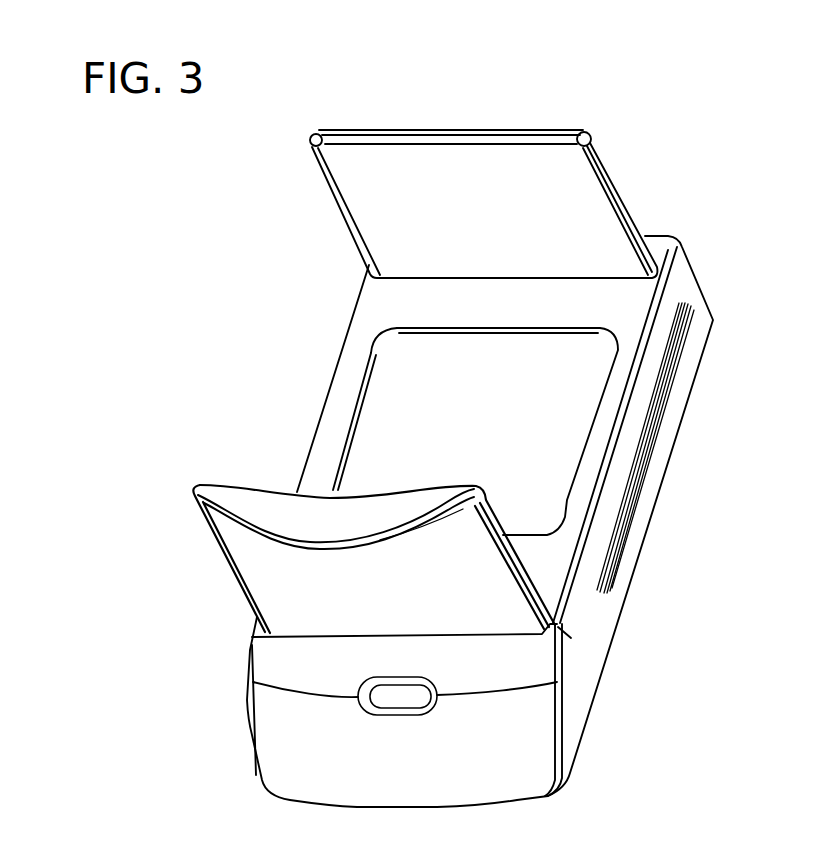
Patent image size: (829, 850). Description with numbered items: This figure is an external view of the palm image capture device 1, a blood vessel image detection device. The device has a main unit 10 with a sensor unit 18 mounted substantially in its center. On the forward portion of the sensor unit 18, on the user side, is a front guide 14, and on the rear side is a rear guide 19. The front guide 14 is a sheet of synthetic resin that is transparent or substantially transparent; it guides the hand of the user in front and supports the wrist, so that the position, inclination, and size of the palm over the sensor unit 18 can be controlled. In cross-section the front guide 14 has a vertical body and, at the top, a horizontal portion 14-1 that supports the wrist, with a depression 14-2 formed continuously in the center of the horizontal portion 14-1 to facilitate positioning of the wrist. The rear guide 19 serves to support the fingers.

The palm image capture device 1 is at (695, 358).
The main unit 10 is at (582, 693).
The front guide 14 is at (280, 576).
The horizontal portion 14-1 is at (238, 490).
The depression 14-2 is at (283, 512).
The sensor unit 18 is at (570, 423).
The rear guide 19 is at (460, 140).